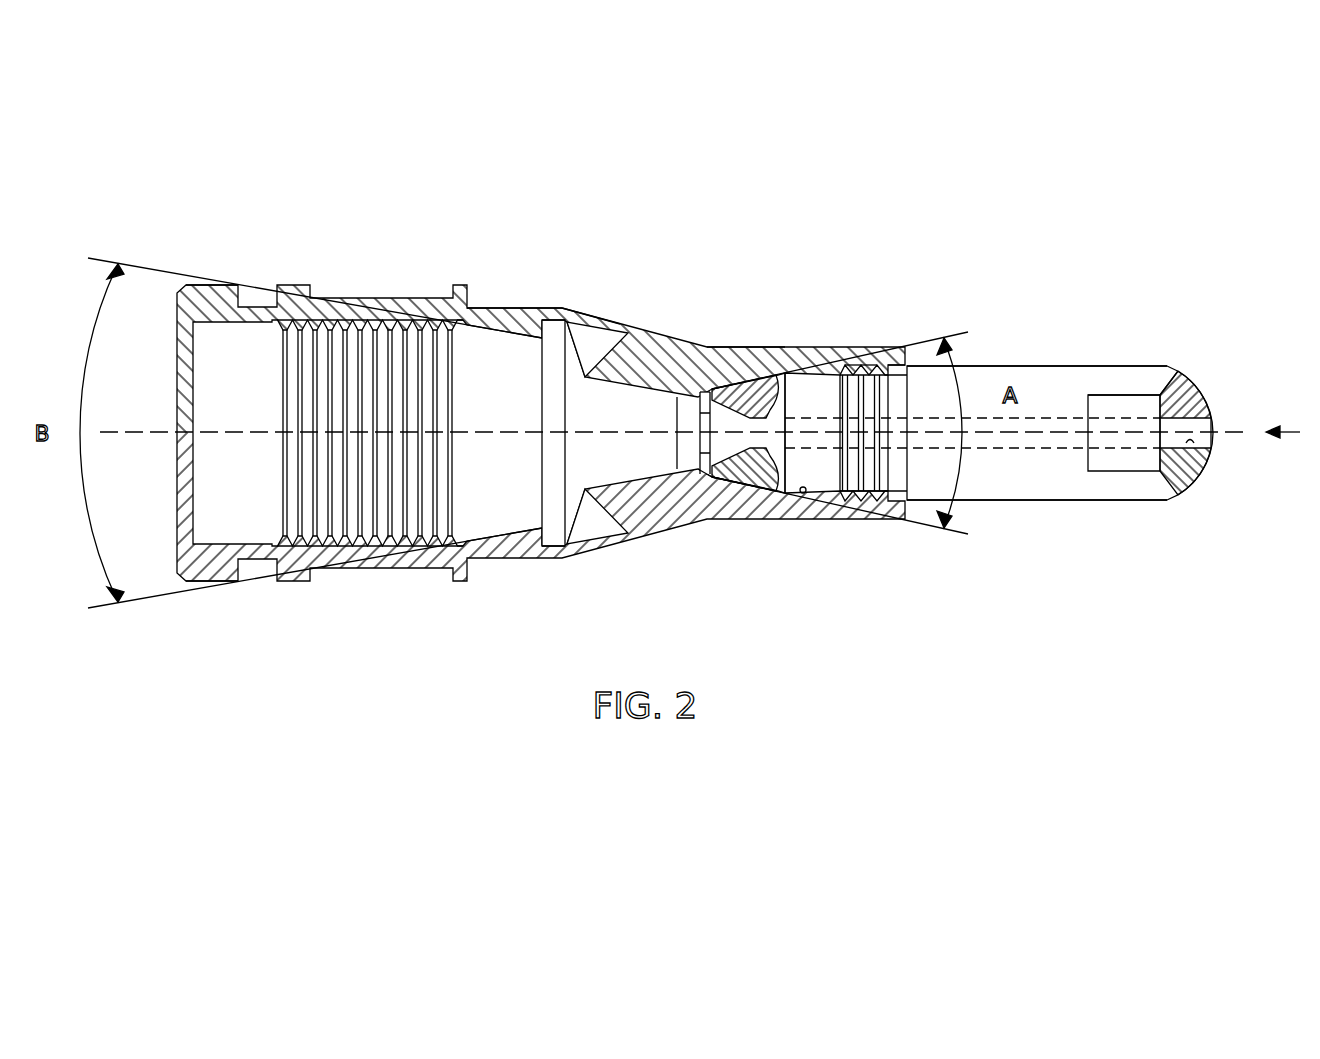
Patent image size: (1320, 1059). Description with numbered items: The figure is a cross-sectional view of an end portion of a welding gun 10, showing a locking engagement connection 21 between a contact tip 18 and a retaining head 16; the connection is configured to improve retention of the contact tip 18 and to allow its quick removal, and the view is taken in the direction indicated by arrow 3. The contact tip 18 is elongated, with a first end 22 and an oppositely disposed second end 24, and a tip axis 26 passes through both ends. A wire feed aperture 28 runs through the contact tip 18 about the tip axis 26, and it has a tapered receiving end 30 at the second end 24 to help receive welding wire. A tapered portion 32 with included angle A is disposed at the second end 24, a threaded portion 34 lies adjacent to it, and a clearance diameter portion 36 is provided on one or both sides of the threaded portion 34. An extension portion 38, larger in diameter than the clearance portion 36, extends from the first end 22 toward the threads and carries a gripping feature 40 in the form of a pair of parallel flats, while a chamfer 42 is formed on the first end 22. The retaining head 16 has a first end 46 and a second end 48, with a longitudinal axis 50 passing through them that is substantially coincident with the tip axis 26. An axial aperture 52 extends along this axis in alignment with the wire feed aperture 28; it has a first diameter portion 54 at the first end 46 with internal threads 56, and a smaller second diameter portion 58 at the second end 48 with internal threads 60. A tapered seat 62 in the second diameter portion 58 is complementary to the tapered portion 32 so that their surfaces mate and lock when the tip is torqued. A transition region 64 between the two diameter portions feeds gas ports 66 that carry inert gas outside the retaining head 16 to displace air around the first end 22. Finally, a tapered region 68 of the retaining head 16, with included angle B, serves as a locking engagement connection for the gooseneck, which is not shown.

The view direction arrow 3 is at (1286, 418).
The welding gun 10 is at (903, 91).
The retaining head 16 is at (427, 297).
The contact tip 18 is at (1078, 366).
The locking engagement connection 21 is at (731, 378).
The first end 22 is at (1185, 375).
The second end 24 is at (702, 470).
The tip axis 26 is at (1166, 449).
The wire feed aperture 28 is at (1192, 447).
The tapered receiving end 30 is at (702, 403).
The tapered portion 32 is at (784, 375).
The threaded portion 34 is at (866, 500).
The clearance diameter portion 36 is at (823, 372).
The extension portion 38 is at (1040, 500).
The gripping feature 40 is at (1128, 400).
The chamfer 42 is at (1210, 408).
The first end 46 is at (207, 288).
The second end 48 is at (872, 350).
The longitudinal axis 50 is at (140, 428).
The axial aperture 52 is at (342, 322).
The first diameter portion 54 is at (228, 548).
The internal threads 56 is at (350, 562).
The second diameter portion 58 is at (803, 495).
The internal threads 60 is at (858, 352).
The tapered seat 62 is at (717, 482).
The transition region 64 is at (542, 546).
The gas ports 66 is at (594, 322).
The tapered region 68 is at (494, 308).